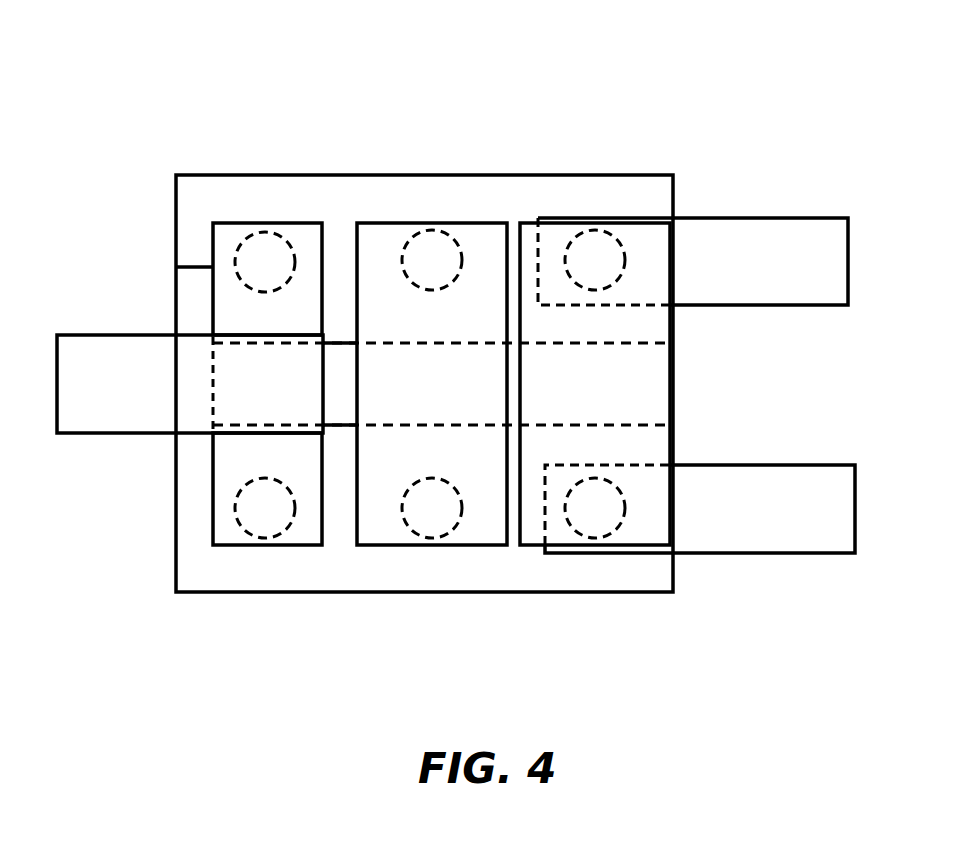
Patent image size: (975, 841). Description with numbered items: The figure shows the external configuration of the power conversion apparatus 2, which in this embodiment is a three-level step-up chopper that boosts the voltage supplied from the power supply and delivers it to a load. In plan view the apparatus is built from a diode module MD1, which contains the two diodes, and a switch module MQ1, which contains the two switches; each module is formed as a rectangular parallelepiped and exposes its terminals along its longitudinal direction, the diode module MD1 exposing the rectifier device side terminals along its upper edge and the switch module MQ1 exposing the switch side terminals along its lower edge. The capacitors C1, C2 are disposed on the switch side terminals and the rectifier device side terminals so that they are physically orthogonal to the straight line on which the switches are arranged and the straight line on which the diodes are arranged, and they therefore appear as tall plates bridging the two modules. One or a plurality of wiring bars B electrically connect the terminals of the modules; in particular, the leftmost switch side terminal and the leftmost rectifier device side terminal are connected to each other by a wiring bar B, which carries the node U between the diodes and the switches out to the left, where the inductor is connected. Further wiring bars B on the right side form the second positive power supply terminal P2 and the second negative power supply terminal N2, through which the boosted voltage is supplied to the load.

The power conversion apparatus 2 is at (82, 73).
The diode module MD1 is at (176, 192).
The switch module MQ1 is at (176, 518).
The capacitor C1 is at (429, 349).
The capacitor C2 is at (601, 349).
The wiring bar B is at (780, 217).
The node U is at (167, 384).
The second positive power supply terminal P2 is at (732, 261).
The second negative power supply terminal N2 is at (740, 509).